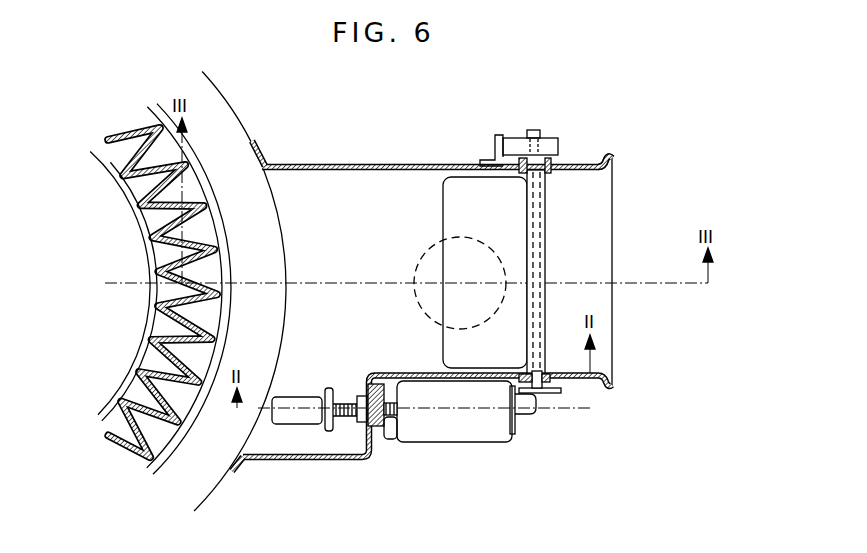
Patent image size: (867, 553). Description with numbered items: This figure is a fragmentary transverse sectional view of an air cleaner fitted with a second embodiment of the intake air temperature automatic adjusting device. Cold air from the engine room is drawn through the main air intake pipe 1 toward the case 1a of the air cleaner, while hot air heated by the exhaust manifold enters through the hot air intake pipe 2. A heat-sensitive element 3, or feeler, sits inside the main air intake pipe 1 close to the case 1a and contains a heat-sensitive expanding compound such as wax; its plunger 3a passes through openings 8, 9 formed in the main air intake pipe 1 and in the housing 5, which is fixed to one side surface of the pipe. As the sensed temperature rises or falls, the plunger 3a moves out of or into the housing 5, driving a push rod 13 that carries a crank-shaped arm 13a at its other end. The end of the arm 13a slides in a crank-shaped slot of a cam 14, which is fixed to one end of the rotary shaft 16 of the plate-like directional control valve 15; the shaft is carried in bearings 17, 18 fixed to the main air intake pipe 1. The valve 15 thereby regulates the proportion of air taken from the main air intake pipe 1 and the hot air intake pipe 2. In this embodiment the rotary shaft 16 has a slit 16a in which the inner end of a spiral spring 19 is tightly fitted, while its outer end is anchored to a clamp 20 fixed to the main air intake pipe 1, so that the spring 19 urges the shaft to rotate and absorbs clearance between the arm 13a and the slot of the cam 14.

The main air intake pipe 1 is at (303, 164).
The case 1a is at (210, 505).
The hot air intake pipe 2 is at (417, 259).
The heat-sensitive element 3 is at (293, 424).
The plunger 3a is at (397, 432).
The housing 5 is at (477, 443).
The opening 8 is at (332, 431).
The opening 9 is at (387, 438).
The push rod 13 is at (518, 420).
The crank-shaped arm 13a is at (535, 414).
The cam 14 is at (552, 393).
The directional control valve 15 is at (443, 205).
The rotary shaft 16 is at (528, 140).
The slit 16a is at (539, 137).
The bearing 17 is at (551, 164).
The bearing 18 is at (596, 381).
The spiral spring 19 is at (600, 153).
The clamp 20 is at (480, 160).